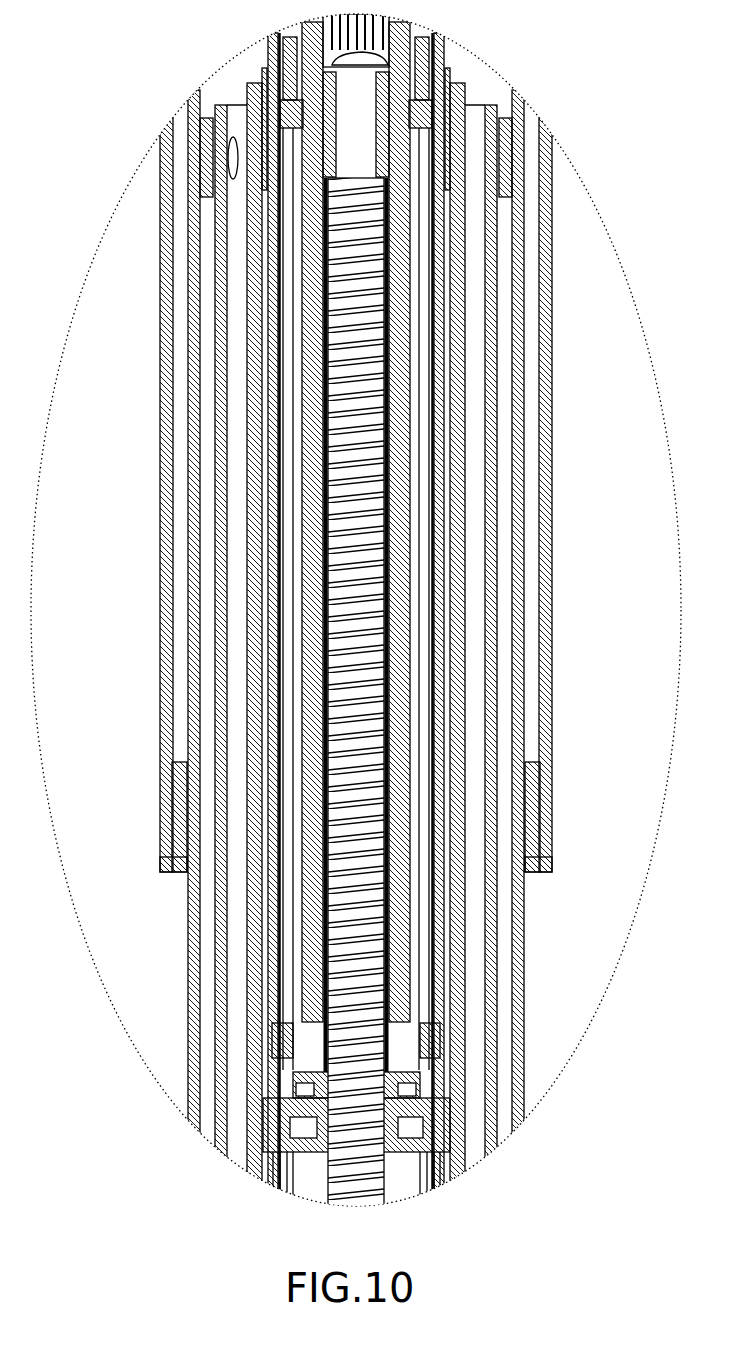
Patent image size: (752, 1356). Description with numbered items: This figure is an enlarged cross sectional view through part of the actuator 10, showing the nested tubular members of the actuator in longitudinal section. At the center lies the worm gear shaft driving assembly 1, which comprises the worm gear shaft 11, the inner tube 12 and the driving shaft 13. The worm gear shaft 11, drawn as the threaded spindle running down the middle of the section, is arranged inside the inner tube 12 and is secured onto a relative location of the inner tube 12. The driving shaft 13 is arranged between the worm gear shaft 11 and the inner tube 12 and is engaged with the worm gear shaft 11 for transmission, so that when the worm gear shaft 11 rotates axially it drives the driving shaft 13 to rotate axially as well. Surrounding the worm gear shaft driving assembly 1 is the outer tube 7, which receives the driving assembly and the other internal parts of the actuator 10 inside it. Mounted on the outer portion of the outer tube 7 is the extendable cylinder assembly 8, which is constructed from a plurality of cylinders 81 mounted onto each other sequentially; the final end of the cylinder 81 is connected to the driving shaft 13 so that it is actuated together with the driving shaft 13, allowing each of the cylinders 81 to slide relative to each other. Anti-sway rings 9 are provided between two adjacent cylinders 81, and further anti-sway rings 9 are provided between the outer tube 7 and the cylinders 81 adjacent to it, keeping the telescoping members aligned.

The worm gear shaft driving assembly 1 is at (480, 287).
The outer tube 7 is at (490, 573).
The extendable cylinder assembly 8 is at (415, 690).
The cylinder 81 is at (547, 410).
The anti-sway ring 9 is at (507, 152).
The actuator 10 is at (207, 31).
The worm gear shaft 11 is at (385, 885).
The inner tube 12 is at (480, 678).
The driving shaft 13 is at (400, 230).